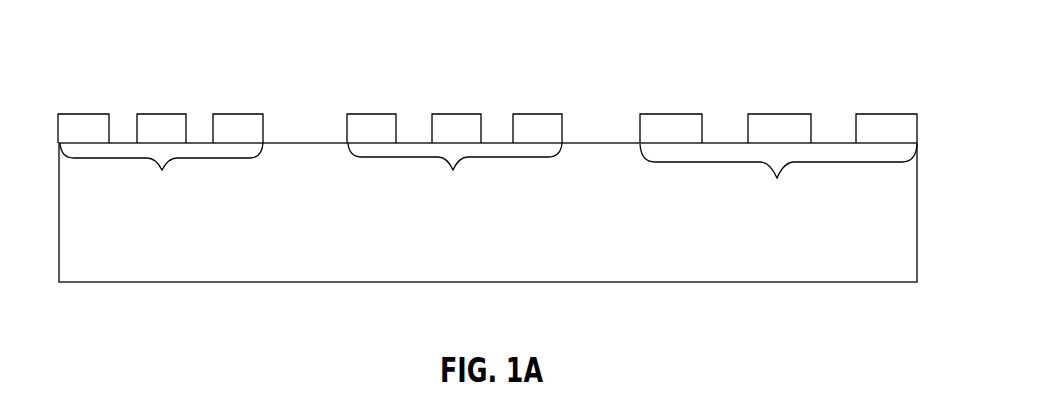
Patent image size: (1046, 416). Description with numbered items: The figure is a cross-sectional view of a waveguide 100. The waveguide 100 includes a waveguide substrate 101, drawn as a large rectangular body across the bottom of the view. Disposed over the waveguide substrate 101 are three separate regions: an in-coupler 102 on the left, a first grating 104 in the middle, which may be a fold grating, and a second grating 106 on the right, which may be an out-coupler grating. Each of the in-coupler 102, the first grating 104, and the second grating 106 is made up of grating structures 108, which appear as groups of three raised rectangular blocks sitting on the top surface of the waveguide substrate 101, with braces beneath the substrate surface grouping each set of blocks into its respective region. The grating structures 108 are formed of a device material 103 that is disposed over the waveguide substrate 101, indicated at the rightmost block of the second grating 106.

The waveguide 100 is at (133, 29).
The waveguide substrate 101 is at (468, 272).
The in-coupler 102 is at (160, 161).
The device material 103 is at (880, 112).
The first grating 104 is at (454, 161).
The second grating 106 is at (778, 166).
The grating structures 108 is at (157, 123).